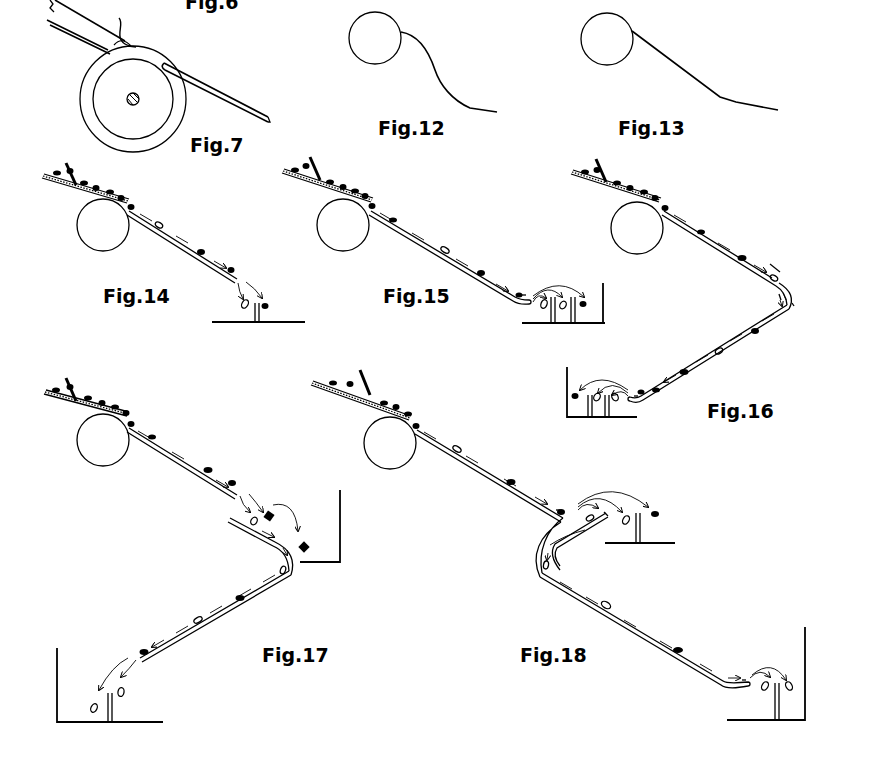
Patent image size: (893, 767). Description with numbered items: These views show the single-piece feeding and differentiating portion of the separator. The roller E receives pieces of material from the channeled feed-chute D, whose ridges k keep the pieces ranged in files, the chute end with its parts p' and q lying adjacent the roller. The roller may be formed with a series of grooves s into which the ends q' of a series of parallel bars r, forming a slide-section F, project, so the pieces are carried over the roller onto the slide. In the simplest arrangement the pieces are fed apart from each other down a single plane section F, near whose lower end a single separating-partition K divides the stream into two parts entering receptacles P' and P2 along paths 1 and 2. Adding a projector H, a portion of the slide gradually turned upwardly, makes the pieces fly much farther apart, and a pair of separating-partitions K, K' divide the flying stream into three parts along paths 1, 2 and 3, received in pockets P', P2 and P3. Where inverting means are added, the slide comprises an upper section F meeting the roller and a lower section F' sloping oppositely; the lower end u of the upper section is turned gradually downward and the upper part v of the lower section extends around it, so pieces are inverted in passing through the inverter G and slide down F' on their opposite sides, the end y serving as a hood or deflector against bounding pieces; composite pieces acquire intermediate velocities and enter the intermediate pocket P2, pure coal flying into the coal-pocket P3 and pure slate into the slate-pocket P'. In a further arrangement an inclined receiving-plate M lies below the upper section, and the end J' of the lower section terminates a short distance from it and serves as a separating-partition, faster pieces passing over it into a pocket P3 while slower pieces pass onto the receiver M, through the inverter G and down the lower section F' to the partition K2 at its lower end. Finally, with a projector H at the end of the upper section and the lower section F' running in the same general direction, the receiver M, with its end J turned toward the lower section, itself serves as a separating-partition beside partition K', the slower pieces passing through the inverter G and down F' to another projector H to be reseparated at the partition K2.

In FIG. 7, the feed drum / roller E is at (133, 99).
In FIG. 12, the feed drum / roller E is at (375, 38).
In FIG. 13, the feed drum / roller E is at (607, 39).
In FIG. 14, the feed drum / roller E is at (103, 225).
In FIG. 15, the feed drum / roller E is at (343, 225).
In FIG. 16, the feed drum / roller E is at (637, 228).
In FIG. 17, the feed drum / roller E is at (103, 440).
In FIG. 18, the feed drum / roller E is at (390, 443).
In FIG. 7, the slide-section F is at (216, 92).
In FIG. 12, the slide-section F is at (449, 72).
In FIG. 13, the slide-section F is at (705, 70).
In FIG. 14, the slide-section F is at (182, 243).
In FIG. 15, the slide-section F is at (450, 253).
In FIG. 16, the slide-section F is at (720, 245).
In FIG. 17, the slide-section F is at (182, 460).
In FIG. 18, the slide-section F is at (490, 476).
In FIG. 16, the lower slide-section F' is at (708, 353).
In FIG. 17, the lower slide-section F' is at (216, 616).
In FIG. 18, the lower slide-section F' is at (645, 630).
In FIG. 14, the feed hopper chute D is at (85, 183).
In FIG. 15, the feed hopper chute D is at (327, 179).
In FIG. 16, the feed hopper chute D is at (616, 180).
In FIG. 17, the feed hopper chute D is at (87, 397).
In FIG. 18, the feed hopper chute D is at (365, 399).
In FIG. 16, the inverter G is at (793, 296).
In FIG. 17, the inverter G is at (273, 558).
In FIG. 18, the inverter G is at (547, 547).
In FIG. 15, the projector H is at (519, 284).
In FIG. 16, the projector H is at (641, 384).
In FIG. 18, the projector H is at (649, 584).
In FIG. 17, the receiving-plate M is at (248, 532).
In FIG. 18, the receiving-plate M is at (580, 541).
In FIG. 18, the deflector J is at (608, 522).
In FIG. 17, the end of lower slide-section J' is at (280, 510).
In FIG. 14, the separating-partition K is at (258, 322).
In FIG. 15, the separating-partition K is at (563, 312).
In FIG. 16, the separating-partition K is at (602, 401).
In FIG. 15, the separating-partition K' is at (577, 319).
In FIG. 16, the separating-partition K' is at (609, 415).
In FIG. 18, the separating-partition K' is at (640, 537).
In FIG. 17, the receptacle K2 is at (110, 696).
In FIG. 18, the receptacle K2 is at (766, 683).
In FIG. 14, the receptacle P' is at (237, 310).
In FIG. 15, the receptacle P' is at (537, 310).
In FIG. 16, the receptacle P' is at (616, 403).
In FIG. 17, the receptacle P' is at (129, 703).
In FIG. 18, the receptacle P' is at (759, 699).
In FIG. 14, the intermediate pocket P2 is at (276, 312).
In FIG. 15, the intermediate pocket P2 is at (563, 310).
In FIG. 16, the intermediate pocket P2 is at (599, 403).
In FIG. 17, the intermediate pocket P2 is at (82, 711).
In FIG. 18, the intermediate pocket P2 is at (705, 616).
In FIG. 15, the coal-pocket P3 is at (586, 311).
In FIG. 16, the coal-pocket P3 is at (576, 404).
In FIG. 17, the coal-pocket P3 is at (319, 526).
In FIG. 18, the coal-pocket P3 is at (656, 526).
In FIG. 14, the trajectory of first-class particle 1 is at (239, 291).
In FIG. 15, the trajectory of first-class particle 1 is at (542, 295).
In FIG. 16, the trajectory of first-class particle 1 is at (619, 390).
In FIG. 17, the trajectory of first-class particle 1 is at (185, 588).
In FIG. 18, the trajectory of first-class particle 1 is at (674, 590).
In FIG. 14, the trajectory of second-class particle 2 is at (255, 285).
In FIG. 15, the trajectory of second-class particle 2 is at (551, 293).
In FIG. 16, the trajectory of second-class particle 2 is at (613, 388).
In FIG. 17, the trajectory of second-class particle 2 is at (183, 591).
In FIG. 18, the trajectory of second-class particle 2 is at (683, 589).
In FIG. 15, the trajectory of third-class particle 3 is at (558, 287).
In FIG. 16, the trajectory of third-class particle 3 is at (604, 382).
In FIG. 18, the trajectory of third-class particle 3 is at (613, 497).
In FIG. 7, the ridges k is at (81, 20).
In FIG. 7, the feed plate p' is at (77, 37).
In FIG. 7, the hook q is at (120, 27).
In FIG. 7, the ends of bars q' is at (178, 61).
In FIG. 7, the grooves s is at (134, 53).
In FIG. 7, the parallel bars r is at (275, 120).
In FIG. 16, the lower end of upper section u is at (772, 299).
In FIG. 16, the upper part of lower section v is at (799, 307).
In FIG. 16, the end y is at (778, 263).